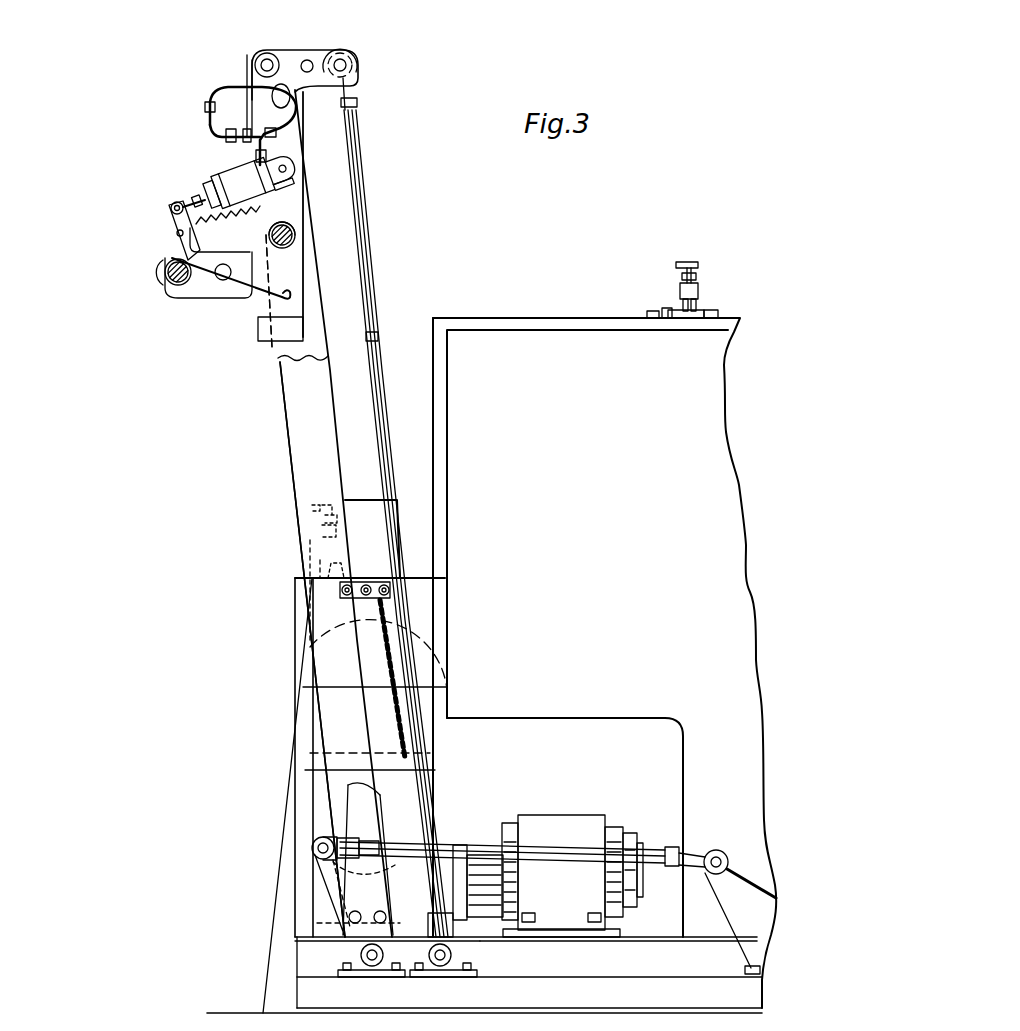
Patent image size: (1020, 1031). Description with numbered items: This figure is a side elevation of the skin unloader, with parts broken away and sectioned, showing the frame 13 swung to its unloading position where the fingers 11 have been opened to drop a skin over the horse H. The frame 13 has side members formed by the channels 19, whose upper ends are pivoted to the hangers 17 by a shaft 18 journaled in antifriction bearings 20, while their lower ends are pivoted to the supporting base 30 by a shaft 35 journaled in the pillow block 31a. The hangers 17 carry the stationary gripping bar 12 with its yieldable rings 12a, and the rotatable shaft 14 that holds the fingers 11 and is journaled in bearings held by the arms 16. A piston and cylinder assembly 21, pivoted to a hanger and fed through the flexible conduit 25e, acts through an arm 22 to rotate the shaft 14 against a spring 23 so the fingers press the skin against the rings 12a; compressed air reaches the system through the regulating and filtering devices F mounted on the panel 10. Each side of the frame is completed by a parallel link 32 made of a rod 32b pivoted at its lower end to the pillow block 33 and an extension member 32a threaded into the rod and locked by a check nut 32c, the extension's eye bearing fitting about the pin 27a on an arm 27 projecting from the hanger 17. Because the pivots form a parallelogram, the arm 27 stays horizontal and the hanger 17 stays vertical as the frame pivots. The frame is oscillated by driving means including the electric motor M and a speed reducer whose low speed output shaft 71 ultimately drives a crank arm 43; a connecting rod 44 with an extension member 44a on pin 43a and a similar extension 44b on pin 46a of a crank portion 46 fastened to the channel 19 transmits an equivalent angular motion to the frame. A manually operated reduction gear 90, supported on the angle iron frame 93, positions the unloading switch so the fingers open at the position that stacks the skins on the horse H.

The panel 10 is at (604, 663).
The pressure regulating and filtering devices F is at (668, 272).
The fingers 11 is at (250, 290).
The gripping bar 12 is at (296, 236).
The rings 12a is at (294, 224).
The frame 13 is at (276, 470).
The shaft 14 is at (166, 276).
The arms 16 is at (212, 290).
The hangers 17 is at (291, 275).
The shaft 18 is at (268, 58).
The channels 19 is at (290, 405).
The antifriction bearings 20 is at (250, 55).
The piston and cylinder assembly 21 is at (232, 182).
The arm 22 is at (170, 228).
The spring 23 is at (190, 192).
The conduit 25e is at (235, 87).
The arm 27 is at (309, 59).
The pin 27a is at (346, 52).
The supporting base 30 is at (300, 985).
The pillow block 31a is at (390, 972).
The parallel links 32 is at (388, 376).
The extension member 32a is at (352, 84).
The rod 32b is at (378, 336).
The check nut 32c is at (360, 103).
The pillow block 33 is at (465, 975).
The shaft 35 is at (350, 953).
The crank arm 43 is at (748, 937).
The pin 43a is at (722, 852).
The connecting rod 44 is at (532, 848).
The extension member 44a is at (682, 855).
The extension 44b is at (352, 838).
The crank portion 46 is at (320, 838).
The pin 46a is at (316, 848).
The low speed output shaft 71 is at (357, 860).
The reduction gear 90 is at (362, 510).
The angle iron frame 93 is at (296, 645).
The horse H is at (322, 632).
The electric motor M is at (548, 876).